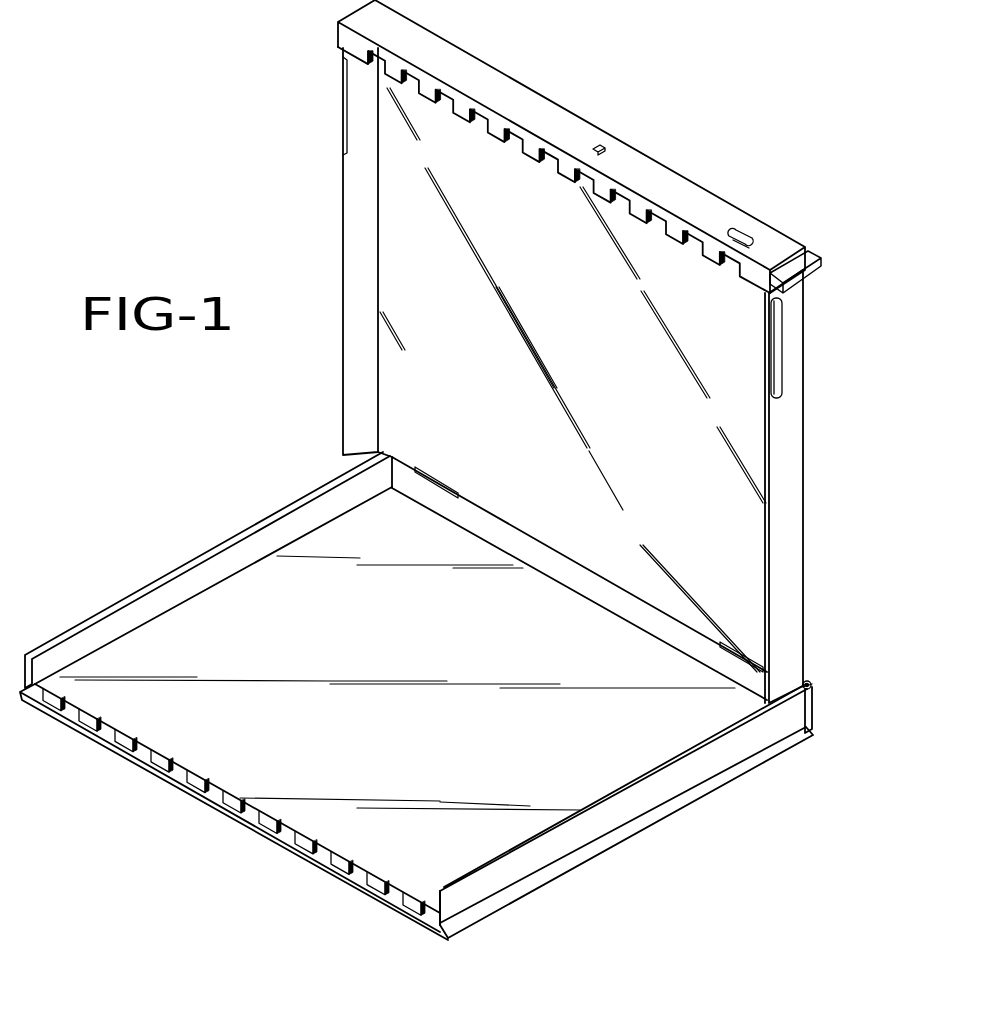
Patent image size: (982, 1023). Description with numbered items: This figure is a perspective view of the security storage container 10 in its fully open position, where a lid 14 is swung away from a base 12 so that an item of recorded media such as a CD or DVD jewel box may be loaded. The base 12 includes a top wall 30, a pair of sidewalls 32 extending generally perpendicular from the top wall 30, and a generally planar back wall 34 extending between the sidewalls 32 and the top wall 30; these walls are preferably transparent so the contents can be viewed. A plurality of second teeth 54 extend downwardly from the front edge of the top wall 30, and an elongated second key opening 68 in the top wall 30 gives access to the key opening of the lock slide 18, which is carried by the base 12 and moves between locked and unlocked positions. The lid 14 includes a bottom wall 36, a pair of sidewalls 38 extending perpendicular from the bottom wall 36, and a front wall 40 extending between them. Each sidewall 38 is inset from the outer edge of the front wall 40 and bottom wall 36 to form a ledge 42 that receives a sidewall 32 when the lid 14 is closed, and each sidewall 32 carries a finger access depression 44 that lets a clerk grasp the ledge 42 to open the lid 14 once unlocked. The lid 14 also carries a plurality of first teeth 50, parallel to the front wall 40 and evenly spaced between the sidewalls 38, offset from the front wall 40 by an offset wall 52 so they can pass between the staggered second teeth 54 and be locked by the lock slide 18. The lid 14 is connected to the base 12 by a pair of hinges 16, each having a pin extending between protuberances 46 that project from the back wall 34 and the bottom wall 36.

The security storage container 10 is at (660, 72).
The base 12 is at (328, 199).
The lid 14 is at (249, 512).
The hinges 16 is at (834, 685).
The lock slide 18 is at (820, 256).
The top wall 30 is at (648, 165).
The sidewalls 32 is at (357, 273).
The back wall 34 is at (410, 245).
The bottom wall 36 is at (697, 652).
The sidewalls 38 is at (213, 568).
The front wall 40 is at (215, 632).
The ledge 42 is at (808, 723).
The finger access depression 44 is at (343, 103).
The protuberances 46 is at (812, 681).
The first teeth 50 is at (195, 786).
The offset wall 52 is at (428, 915).
The second teeth 54 is at (492, 132).
The second key opening 68 is at (744, 235).